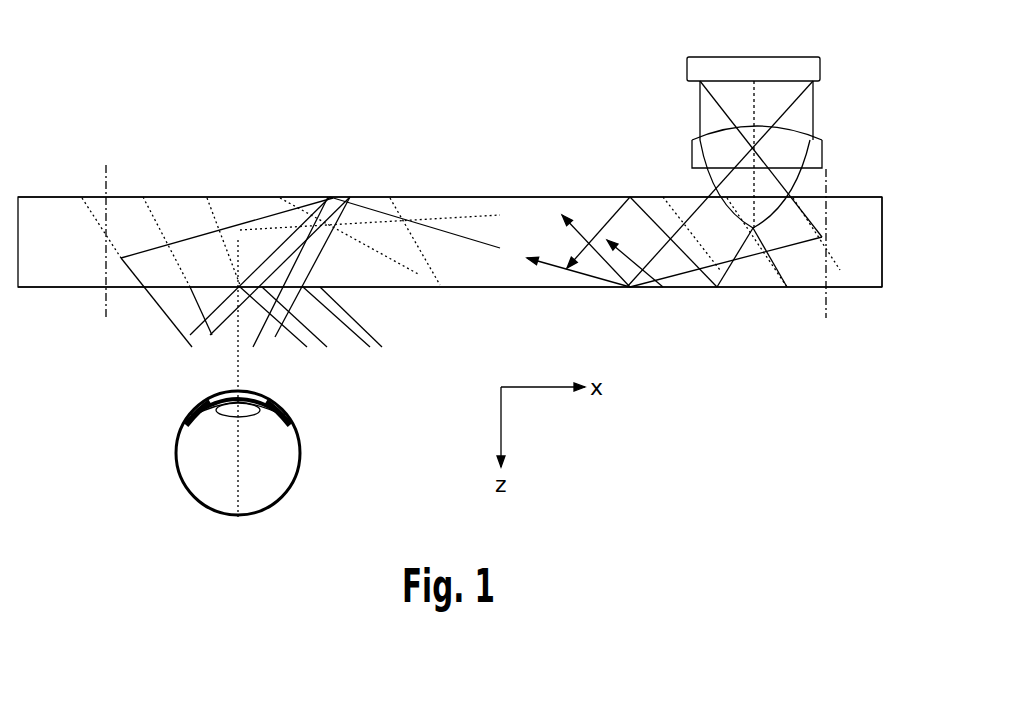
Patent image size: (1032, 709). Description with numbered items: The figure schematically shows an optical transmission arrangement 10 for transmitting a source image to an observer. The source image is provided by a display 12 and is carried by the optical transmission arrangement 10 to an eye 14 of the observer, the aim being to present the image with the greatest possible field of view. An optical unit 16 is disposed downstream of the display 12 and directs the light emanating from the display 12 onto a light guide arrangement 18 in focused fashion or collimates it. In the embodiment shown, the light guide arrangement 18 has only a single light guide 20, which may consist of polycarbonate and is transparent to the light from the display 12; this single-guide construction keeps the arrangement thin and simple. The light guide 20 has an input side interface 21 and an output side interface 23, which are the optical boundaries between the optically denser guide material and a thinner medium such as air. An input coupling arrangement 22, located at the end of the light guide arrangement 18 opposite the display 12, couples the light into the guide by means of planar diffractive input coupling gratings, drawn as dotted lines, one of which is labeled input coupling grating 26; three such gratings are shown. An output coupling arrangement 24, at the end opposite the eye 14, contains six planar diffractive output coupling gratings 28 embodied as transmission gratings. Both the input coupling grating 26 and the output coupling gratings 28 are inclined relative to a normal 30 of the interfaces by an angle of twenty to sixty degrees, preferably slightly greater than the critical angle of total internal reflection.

The optical transmission arrangement 10 is at (343, 83).
The display 12 is at (762, 57).
The eye 14 is at (192, 455).
The optical unit 16 is at (822, 152).
The light guide arrangement 18 is at (890, 228).
The light guide 20 is at (868, 243).
The input side interface 21 is at (510, 195).
The input coupling arrangement 22 is at (668, 180).
The output side interface 23 is at (497, 288).
The output coupling arrangement 24 is at (131, 296).
The diffractive input coupling grating 26 is at (773, 272).
The diffractive planar output coupling grating 28 is at (213, 195).
The normal 30 is at (826, 318).